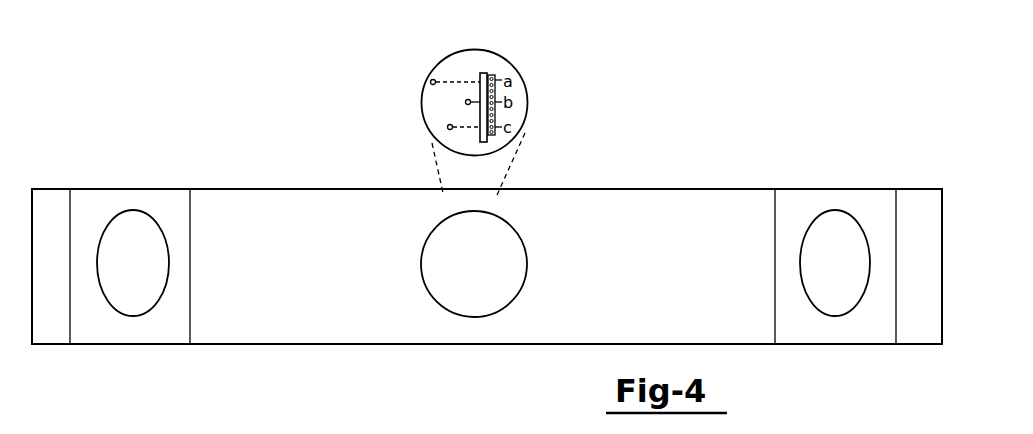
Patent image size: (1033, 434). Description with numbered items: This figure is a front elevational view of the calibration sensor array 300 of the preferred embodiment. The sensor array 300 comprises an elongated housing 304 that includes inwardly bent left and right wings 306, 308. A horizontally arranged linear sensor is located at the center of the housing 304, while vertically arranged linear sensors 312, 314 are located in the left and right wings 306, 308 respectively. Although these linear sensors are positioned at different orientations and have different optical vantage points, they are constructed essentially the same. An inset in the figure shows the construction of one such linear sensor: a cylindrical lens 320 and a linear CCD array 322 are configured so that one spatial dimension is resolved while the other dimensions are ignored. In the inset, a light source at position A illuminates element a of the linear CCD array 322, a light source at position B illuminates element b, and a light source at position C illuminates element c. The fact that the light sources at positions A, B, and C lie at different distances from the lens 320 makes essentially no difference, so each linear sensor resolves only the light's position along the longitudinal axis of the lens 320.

The sensor array 300 is at (677, 113).
The elongated housing 304 is at (338, 330).
The left wing 306 is at (165, 333).
The right wing 308 is at (823, 328).
The linear sensor 312 is at (140, 225).
The linear sensor 314 is at (832, 238).
The cylindrical lens 320 is at (479, 74).
The linear CCD array 322 is at (498, 78).
The light source position A is at (431, 81).
The light source position B is at (466, 102).
The light source position C is at (450, 130).